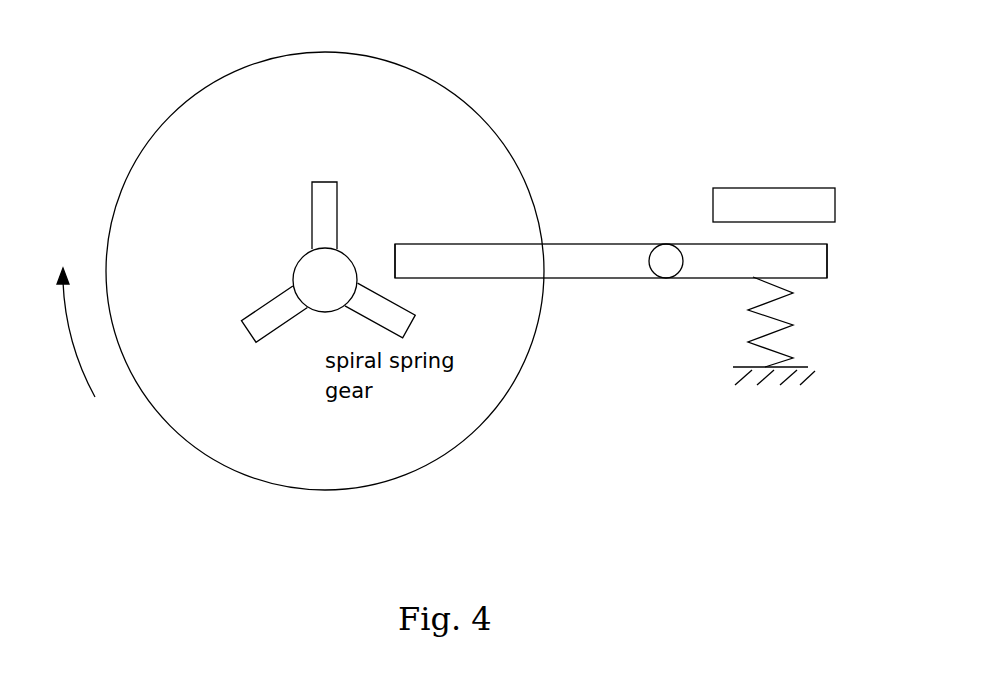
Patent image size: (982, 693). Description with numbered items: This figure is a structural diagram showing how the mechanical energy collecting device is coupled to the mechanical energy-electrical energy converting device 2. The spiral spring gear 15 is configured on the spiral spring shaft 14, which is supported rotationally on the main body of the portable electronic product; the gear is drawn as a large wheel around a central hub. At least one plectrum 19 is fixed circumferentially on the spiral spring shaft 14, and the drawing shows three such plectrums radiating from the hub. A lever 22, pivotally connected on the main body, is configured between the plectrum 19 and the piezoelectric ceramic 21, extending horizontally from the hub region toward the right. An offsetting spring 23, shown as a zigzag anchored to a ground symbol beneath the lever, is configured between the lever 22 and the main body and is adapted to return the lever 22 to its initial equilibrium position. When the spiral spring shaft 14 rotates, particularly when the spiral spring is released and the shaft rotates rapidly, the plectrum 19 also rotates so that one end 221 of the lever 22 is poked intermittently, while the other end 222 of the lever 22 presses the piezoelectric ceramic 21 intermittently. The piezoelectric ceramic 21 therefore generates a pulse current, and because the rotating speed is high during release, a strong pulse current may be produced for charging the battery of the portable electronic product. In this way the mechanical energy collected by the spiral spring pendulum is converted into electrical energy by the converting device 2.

The mechanical energy-electrical energy converting device 2 is at (676, 188).
The spiral spring shaft 14 is at (317, 305).
The spiral spring gear 15 is at (432, 420).
The plectrum 19 is at (262, 322).
The piezoelectric ceramic 21 is at (770, 205).
The lever 22 is at (603, 277).
The offsetting spring 23 is at (767, 350).
The one end of lever 221 is at (412, 258).
The other end of lever 222 is at (808, 272).